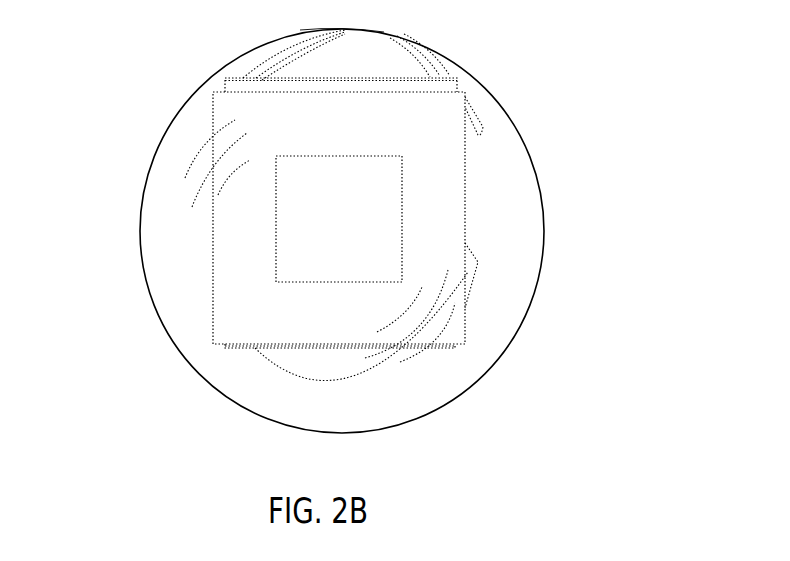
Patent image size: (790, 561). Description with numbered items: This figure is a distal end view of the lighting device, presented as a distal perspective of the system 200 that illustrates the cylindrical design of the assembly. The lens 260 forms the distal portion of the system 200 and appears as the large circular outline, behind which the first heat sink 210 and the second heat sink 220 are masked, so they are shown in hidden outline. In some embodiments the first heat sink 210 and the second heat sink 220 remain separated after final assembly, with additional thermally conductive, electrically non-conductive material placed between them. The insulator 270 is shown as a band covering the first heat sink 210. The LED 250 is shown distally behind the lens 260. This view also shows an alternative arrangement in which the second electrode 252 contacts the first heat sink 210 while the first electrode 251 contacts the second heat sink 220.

The system 200 is at (586, 78).
The first heat sink 210 is at (340, 53).
The second heat sink 220 is at (474, 266).
The LED 250 is at (237, 215).
The first electrode 251 is at (240, 347).
The second electrode 252 is at (453, 68).
The lens 260 is at (188, 137).
The insulator 270 is at (400, 37).